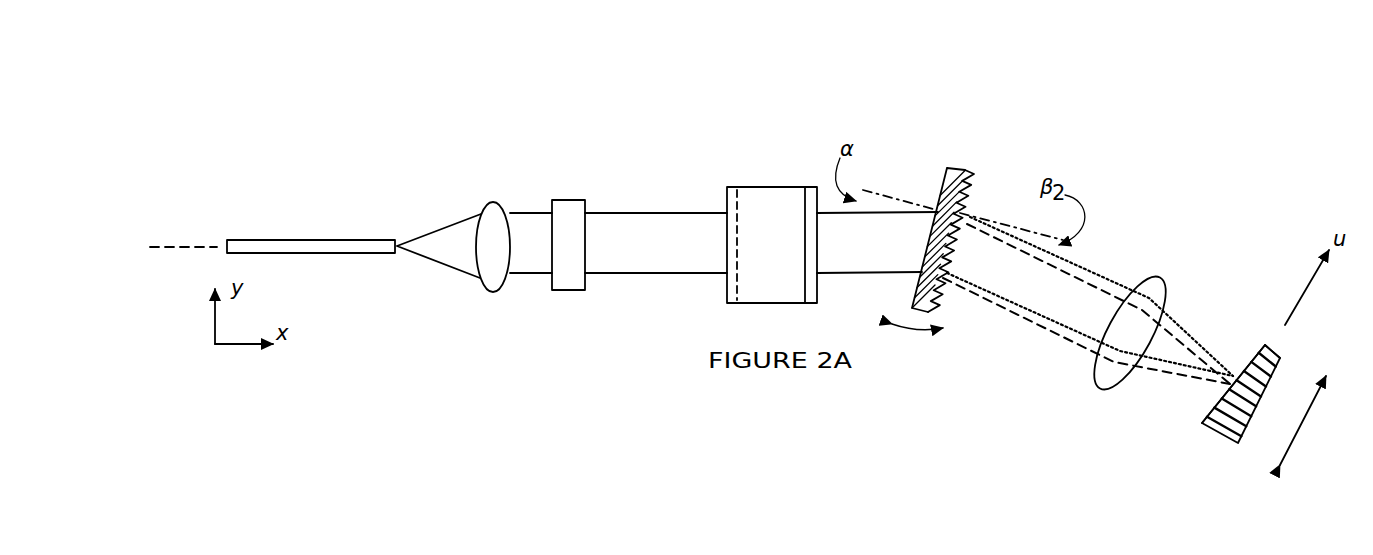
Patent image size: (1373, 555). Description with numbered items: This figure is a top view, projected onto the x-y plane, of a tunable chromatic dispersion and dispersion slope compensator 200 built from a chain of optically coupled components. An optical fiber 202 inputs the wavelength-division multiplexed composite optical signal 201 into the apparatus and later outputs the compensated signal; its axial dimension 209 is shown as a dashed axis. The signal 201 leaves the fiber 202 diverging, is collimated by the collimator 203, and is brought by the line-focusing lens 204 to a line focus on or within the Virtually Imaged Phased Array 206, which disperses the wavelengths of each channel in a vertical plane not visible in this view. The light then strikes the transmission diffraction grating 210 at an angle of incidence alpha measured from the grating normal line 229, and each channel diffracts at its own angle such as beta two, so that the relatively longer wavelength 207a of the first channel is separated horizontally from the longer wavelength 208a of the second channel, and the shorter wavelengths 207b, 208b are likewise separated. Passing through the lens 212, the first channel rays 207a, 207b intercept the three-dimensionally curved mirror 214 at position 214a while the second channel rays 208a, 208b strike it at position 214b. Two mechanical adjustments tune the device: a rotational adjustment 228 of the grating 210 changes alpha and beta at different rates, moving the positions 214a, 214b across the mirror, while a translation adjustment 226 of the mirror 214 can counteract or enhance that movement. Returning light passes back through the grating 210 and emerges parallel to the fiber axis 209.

The compensator 200 is at (361, 73).
The composite optical signal 201 is at (450, 222).
The optical fiber 202 is at (327, 238).
The collimator 203 is at (490, 202).
The line-focusing lens 204 is at (572, 200).
The Virtually Imaged Phased Array (VIPA) 206 is at (757, 187).
The relatively longer wavelength of the first channel 207a is at (1103, 300).
The relatively shorter wavelength of the first channel 207b is at (1060, 337).
The relatively longer wavelength of the second channel 208a is at (1099, 276).
The relatively shorter wavelength of the second channel 208b is at (1048, 318).
The axial dimension of fiber 209 is at (200, 247).
The transmission diffraction grating 210 is at (958, 168).
The lens 212 is at (1163, 277).
The three-dimensionally curved mirror 214 is at (1280, 354).
The position on mirror for first channel 214a is at (1222, 392).
The position on mirror for second channel 214b is at (1235, 373).
The translation adjustment 226 is at (1303, 427).
The rotational adjustment 228 is at (922, 331).
The normal line 229 is at (900, 197).